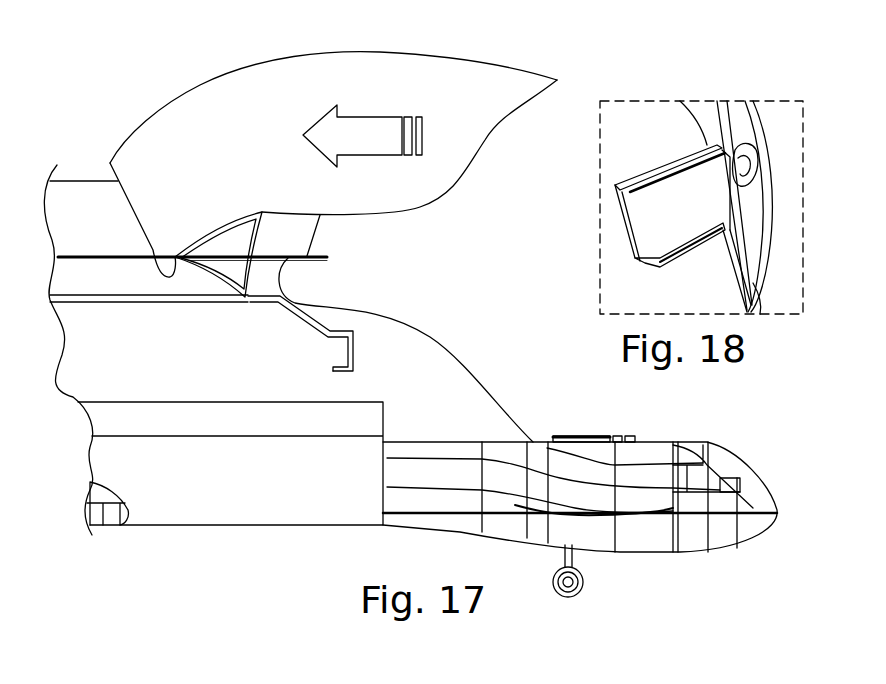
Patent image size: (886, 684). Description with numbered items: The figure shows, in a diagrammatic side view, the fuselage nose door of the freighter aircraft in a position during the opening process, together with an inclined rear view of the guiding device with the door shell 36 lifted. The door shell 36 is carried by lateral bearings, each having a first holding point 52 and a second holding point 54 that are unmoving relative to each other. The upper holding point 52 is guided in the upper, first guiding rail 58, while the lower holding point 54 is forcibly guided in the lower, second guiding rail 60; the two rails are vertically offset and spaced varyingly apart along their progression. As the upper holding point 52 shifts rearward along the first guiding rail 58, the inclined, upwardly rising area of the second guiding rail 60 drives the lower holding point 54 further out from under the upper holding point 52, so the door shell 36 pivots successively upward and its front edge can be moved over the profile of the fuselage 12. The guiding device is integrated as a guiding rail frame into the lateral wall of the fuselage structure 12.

In FIG. 17, the fuselage area 12 is at (418, 375).
In FIG. 18, the fuselage area 12 is at (622, 120).
In FIG. 17, the door shell 36 is at (452, 77).
In FIG. 18, the door shell 36 is at (753, 118).
In FIG. 17, the first holding point 52 is at (175, 257).
In FIG. 17, the second holding point 54 is at (247, 303).
In FIG. 17, the first guiding rail 58 is at (117, 257).
In FIG. 17, the second guiding rail 60 is at (138, 303).
In FIG. 18, the second guiding rail 60 is at (653, 222).